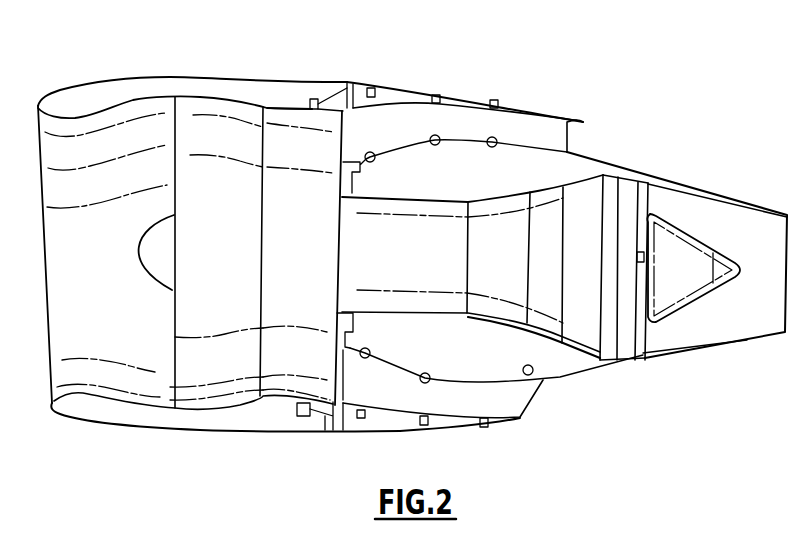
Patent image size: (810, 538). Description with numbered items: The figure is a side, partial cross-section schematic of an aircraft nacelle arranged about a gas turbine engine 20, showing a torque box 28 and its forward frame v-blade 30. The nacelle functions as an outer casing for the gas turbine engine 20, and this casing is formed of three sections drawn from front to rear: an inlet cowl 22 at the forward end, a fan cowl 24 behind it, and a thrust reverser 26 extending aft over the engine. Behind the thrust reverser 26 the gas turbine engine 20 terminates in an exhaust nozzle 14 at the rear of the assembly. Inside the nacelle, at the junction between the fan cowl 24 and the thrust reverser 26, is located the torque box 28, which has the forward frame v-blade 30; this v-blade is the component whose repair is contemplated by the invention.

The exhaust nozzle 14 is at (708, 192).
The gas turbine engine 20 is at (372, 278).
The inlet cowl 22 is at (107, 80).
The fan cowl 24 is at (289, 82).
The thrust reverser 26 is at (508, 102).
The torque box 28 is at (347, 82).
The forward frame v-blade 30 is at (300, 100).